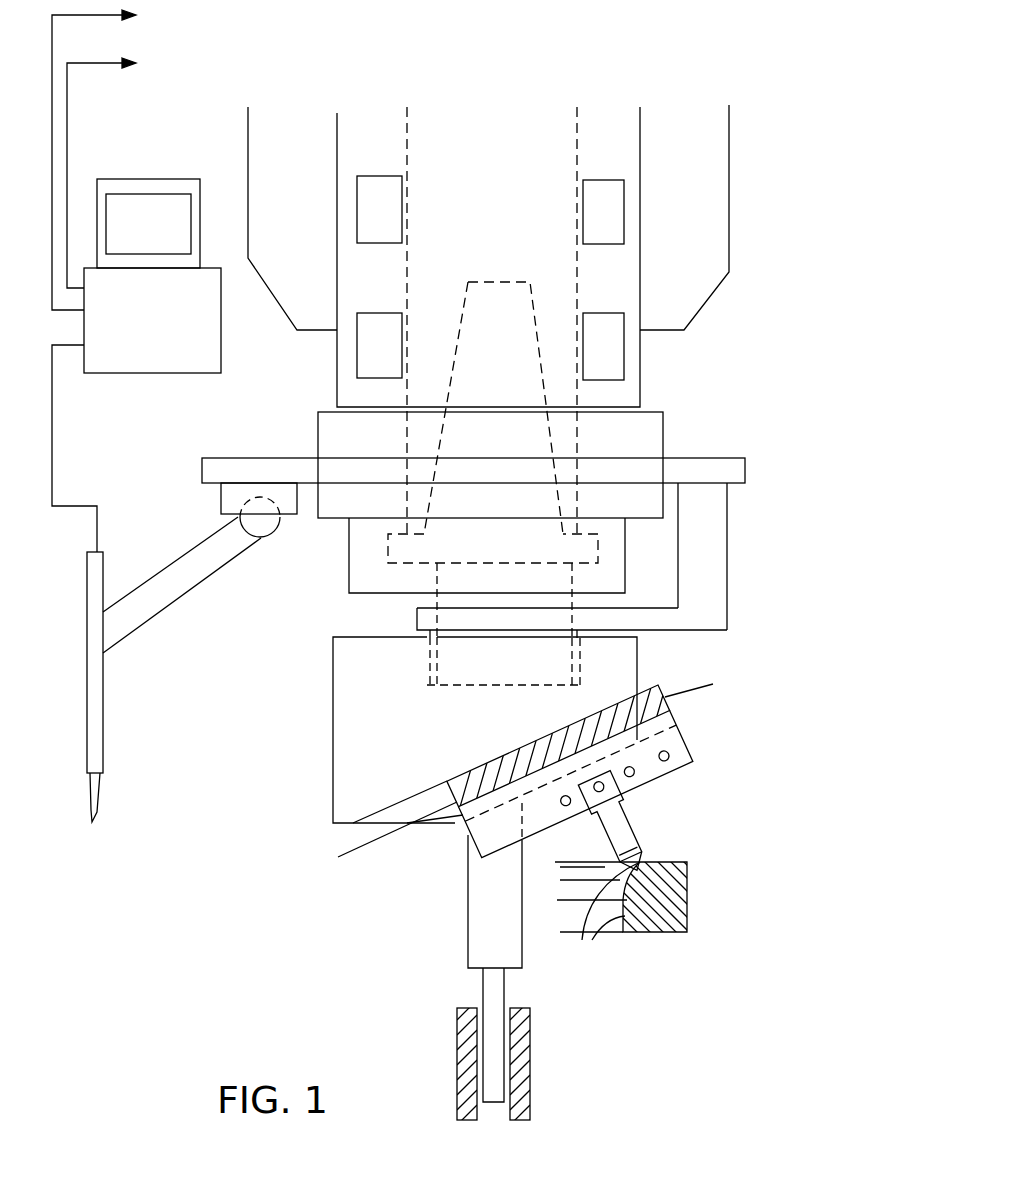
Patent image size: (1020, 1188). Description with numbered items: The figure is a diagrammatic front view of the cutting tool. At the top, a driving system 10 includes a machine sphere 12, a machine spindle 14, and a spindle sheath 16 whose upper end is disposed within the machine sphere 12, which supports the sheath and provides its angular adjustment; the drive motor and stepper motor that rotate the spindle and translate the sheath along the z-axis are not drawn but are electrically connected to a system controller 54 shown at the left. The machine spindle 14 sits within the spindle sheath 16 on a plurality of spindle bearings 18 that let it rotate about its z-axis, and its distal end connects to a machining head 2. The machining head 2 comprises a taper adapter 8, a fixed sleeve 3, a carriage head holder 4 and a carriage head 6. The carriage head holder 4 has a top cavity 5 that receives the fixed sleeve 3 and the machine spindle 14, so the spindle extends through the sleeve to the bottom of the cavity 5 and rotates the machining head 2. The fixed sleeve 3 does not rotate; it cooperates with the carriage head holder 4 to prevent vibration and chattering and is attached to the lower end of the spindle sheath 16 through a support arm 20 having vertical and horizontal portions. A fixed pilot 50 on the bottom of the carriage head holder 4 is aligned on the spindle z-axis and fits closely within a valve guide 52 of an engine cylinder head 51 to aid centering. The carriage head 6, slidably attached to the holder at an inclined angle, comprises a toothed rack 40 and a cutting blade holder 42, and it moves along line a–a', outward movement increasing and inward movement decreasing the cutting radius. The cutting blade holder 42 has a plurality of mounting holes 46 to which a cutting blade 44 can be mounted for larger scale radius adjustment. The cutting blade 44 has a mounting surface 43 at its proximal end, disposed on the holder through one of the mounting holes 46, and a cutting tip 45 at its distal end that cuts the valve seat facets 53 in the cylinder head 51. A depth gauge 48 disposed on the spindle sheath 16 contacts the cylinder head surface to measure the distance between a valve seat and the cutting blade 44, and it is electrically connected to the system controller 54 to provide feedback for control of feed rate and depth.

The machining head 2 is at (572, 670).
The fixed sleeve 3 is at (580, 630).
The carriage head holder 4 is at (632, 664).
The cavity 5 is at (425, 660).
The carriage head 6 is at (634, 769).
The taper adapter 8 is at (528, 535).
The driving system 10 is at (514, 334).
The machine sphere 12 is at (255, 156).
The machine spindle 14 is at (562, 398).
The spindle sheath 16 is at (628, 282).
The spindle bearings 18 is at (383, 317).
The support arm 20 is at (713, 508).
The toothed rack 40 is at (650, 718).
The cutting blade holder 42 is at (675, 740).
The mounting surface 43 is at (620, 814).
The cutting blade 44 is at (648, 823).
The cutting tip 45 is at (645, 850).
The mounting holes 46 is at (672, 758).
The depth gauge 48 is at (103, 710).
The fixed pilot 50 is at (495, 996).
The cylinder head 51 is at (680, 908).
The valve guide 52 is at (460, 1047).
The facet 53 is at (586, 943).
The system controller 54 is at (218, 313).
The line a–a' a is at (388, 836).
The line a– a' is at (702, 683).